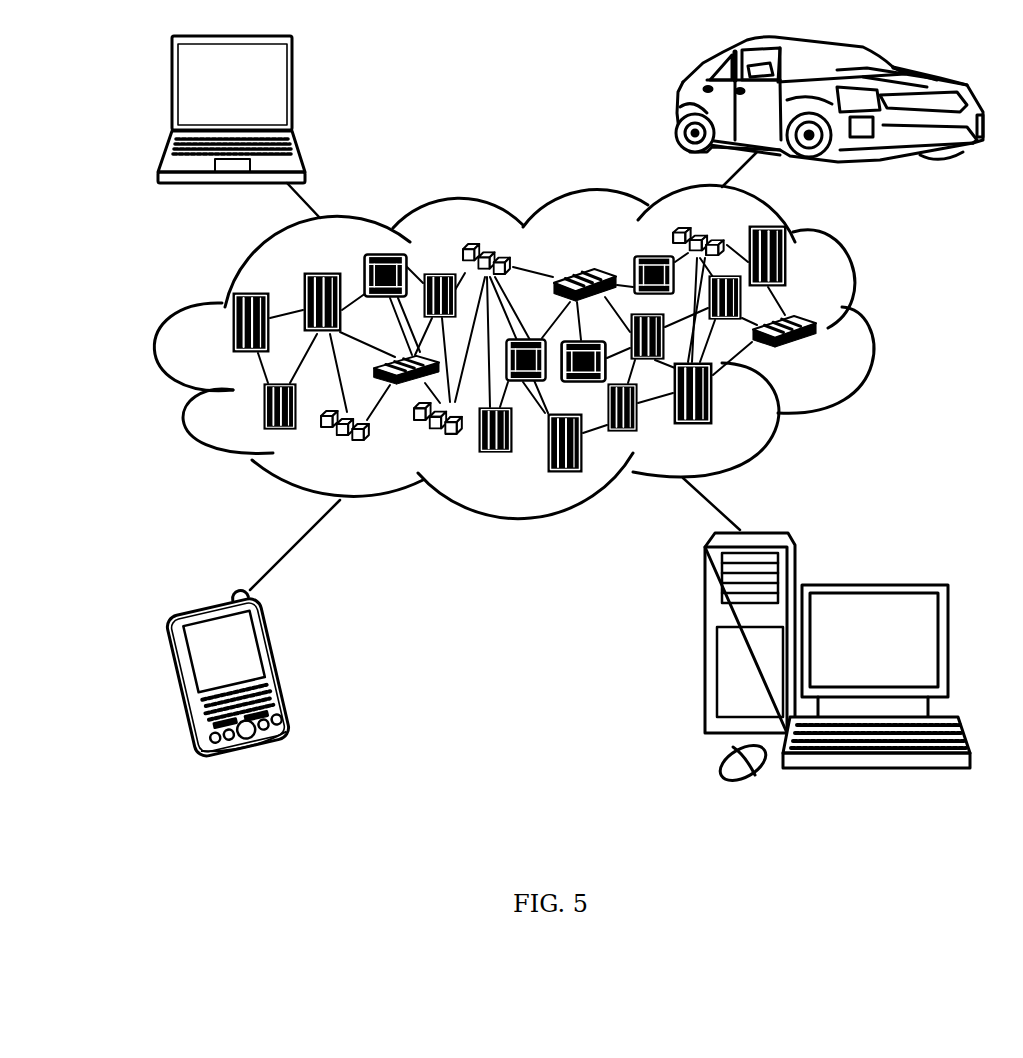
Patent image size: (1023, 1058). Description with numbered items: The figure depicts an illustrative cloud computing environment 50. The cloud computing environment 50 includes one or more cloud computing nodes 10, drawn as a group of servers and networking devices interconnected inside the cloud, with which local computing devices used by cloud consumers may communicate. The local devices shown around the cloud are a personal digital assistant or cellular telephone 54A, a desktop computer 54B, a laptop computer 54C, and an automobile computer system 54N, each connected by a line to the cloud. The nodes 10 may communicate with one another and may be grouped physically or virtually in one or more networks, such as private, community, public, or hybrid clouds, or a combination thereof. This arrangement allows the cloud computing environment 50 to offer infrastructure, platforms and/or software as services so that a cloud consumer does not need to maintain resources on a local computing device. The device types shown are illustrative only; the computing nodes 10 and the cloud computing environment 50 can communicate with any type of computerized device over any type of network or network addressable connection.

The cloud computing nodes 10 is at (828, 358).
The cloud computing environment 50 is at (875, 332).
The personal digital assistant (PDA) or cellular telephone 54A is at (285, 668).
The desktop computer 54B is at (872, 585).
The laptop computer 54C is at (292, 84).
The automobile computer system 54N is at (678, 100).